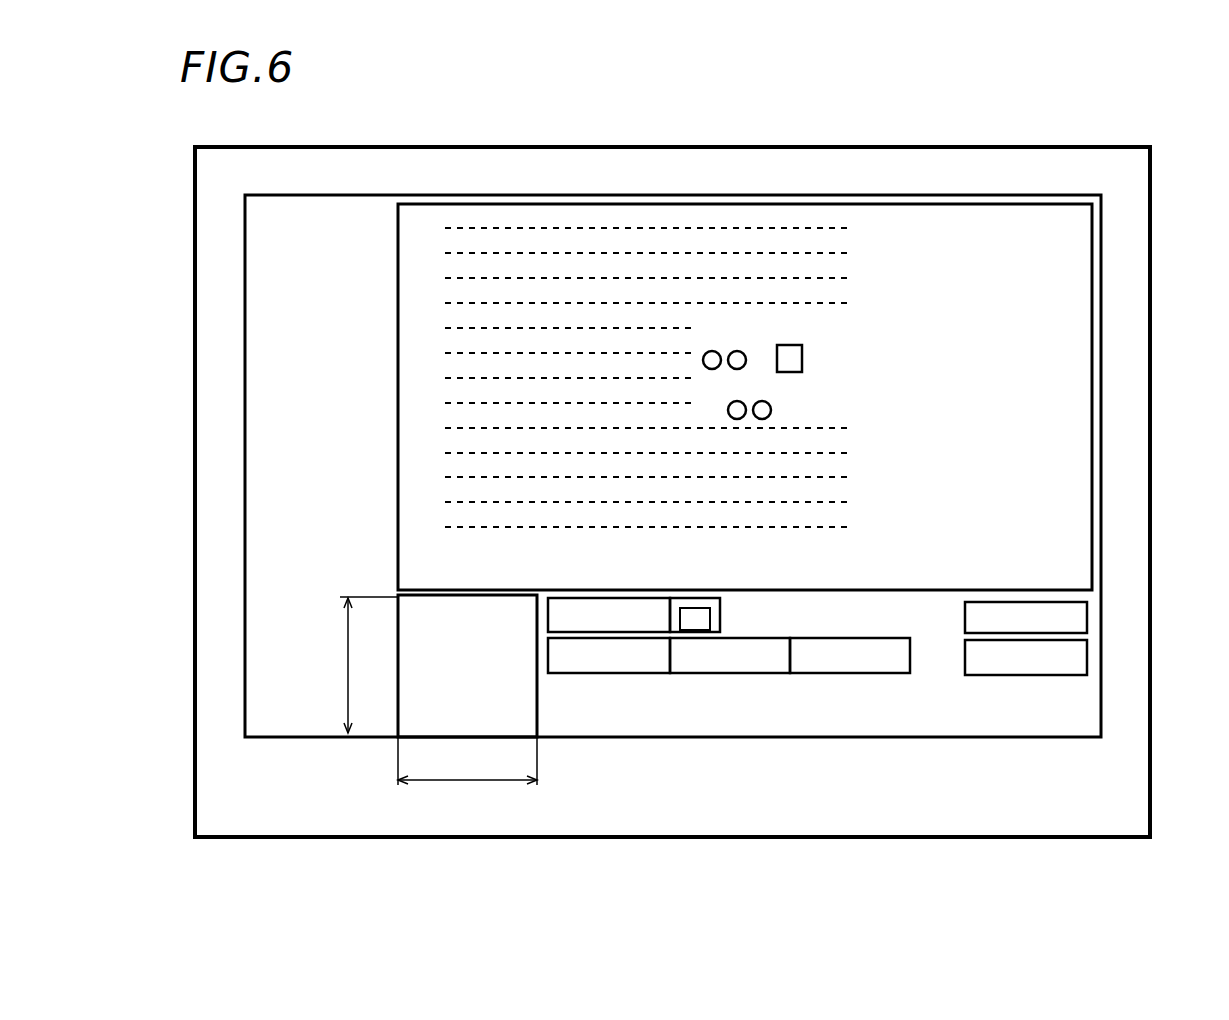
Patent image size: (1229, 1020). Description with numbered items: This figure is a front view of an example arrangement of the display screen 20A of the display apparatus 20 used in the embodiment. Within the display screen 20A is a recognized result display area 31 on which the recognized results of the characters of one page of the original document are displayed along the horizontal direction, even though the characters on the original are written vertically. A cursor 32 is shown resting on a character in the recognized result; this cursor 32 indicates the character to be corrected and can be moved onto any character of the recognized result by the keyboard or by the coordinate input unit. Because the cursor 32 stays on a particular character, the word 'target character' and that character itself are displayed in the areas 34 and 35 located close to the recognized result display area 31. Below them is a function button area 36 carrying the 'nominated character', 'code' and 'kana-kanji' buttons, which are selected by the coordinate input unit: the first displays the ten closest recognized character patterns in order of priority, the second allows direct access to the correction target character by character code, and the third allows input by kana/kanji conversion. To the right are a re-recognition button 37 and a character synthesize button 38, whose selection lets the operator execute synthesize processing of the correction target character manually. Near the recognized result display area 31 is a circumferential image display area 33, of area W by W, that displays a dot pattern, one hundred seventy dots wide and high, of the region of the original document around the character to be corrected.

The display apparatus 20 is at (987, 148).
The display screen 20A is at (360, 195).
The recognized result display area 31 is at (640, 204).
The cursor 32 is at (803, 345).
The circumferential image display area 33 is at (398, 713).
The target character area 34 is at (622, 598).
The target character display area 35 is at (704, 598).
The function button area 36 is at (812, 638).
The re-recognition button 37 is at (1087, 617).
The character synthesize button 38 is at (1087, 653).